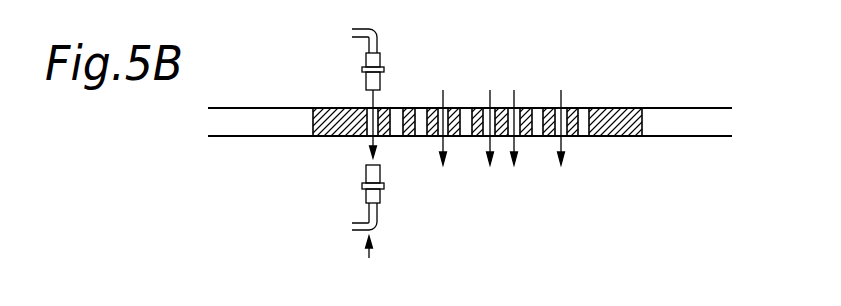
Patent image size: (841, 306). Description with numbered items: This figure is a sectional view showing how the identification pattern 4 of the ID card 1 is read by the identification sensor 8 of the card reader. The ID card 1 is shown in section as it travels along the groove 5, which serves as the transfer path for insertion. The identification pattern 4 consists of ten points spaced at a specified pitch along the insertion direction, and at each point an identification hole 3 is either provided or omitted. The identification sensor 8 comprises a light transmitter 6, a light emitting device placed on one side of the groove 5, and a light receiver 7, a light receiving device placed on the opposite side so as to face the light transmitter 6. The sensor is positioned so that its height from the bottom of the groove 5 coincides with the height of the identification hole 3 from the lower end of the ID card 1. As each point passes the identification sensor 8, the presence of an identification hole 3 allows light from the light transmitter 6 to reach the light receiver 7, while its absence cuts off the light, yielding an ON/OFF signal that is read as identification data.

The ID card 1 is at (618, 108).
The identification hole 3 is at (366, 104).
The identification pattern 4 is at (590, 165).
The groove 5 is at (676, 136).
The light transmitter 6 is at (392, 65).
The light receiver 7 is at (385, 194).
The identification sensor 8 is at (369, 258).